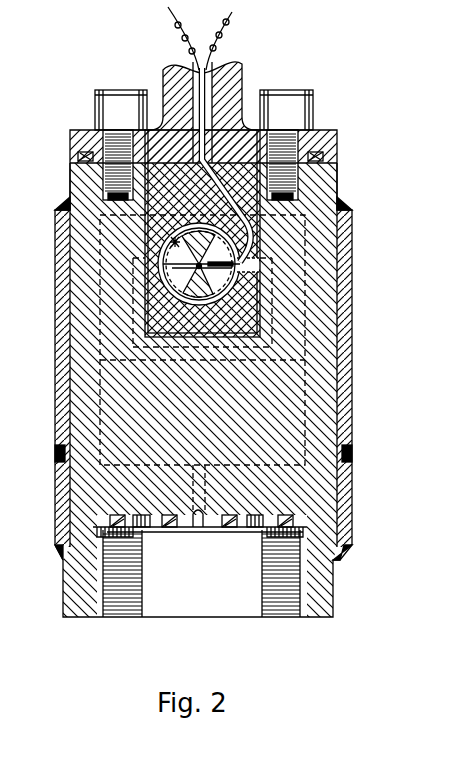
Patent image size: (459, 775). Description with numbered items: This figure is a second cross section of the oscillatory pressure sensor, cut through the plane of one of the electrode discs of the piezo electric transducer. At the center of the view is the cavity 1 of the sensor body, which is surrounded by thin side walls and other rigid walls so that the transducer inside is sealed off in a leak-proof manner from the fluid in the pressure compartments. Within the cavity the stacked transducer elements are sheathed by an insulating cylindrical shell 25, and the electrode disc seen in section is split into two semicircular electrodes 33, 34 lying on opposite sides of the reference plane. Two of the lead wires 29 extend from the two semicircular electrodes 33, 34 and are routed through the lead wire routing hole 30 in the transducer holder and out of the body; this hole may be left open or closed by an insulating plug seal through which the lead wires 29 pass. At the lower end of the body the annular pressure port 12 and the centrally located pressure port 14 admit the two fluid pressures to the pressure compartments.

The cavity 1 is at (176, 150).
The lead wires 29 is at (230, 32).
The lead wire routing hole 30 is at (283, 212).
The semicircular electrode 33 is at (175, 242).
The semicircular electrode 34 is at (180, 284).
The insulating cylindrical shell 25 is at (237, 303).
The annular pressure port 12 is at (143, 527).
The centrally located pressure port 14 is at (193, 527).